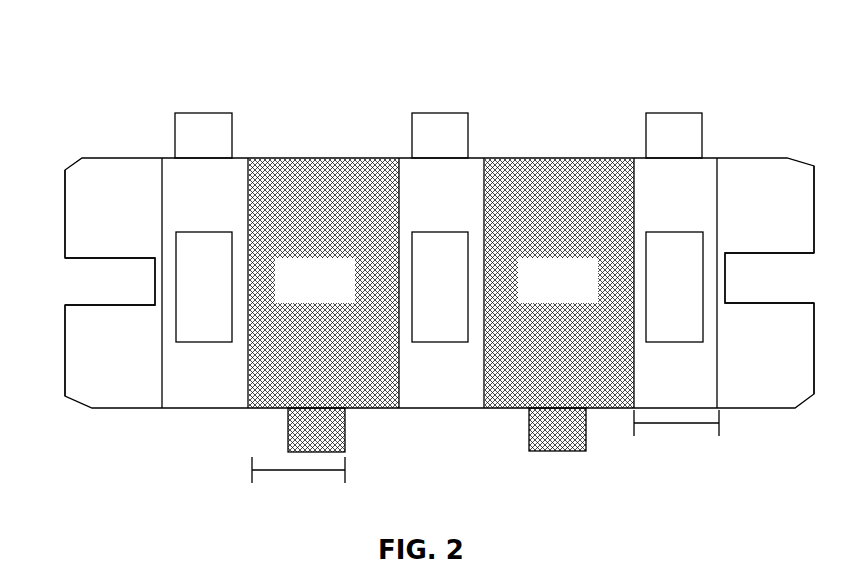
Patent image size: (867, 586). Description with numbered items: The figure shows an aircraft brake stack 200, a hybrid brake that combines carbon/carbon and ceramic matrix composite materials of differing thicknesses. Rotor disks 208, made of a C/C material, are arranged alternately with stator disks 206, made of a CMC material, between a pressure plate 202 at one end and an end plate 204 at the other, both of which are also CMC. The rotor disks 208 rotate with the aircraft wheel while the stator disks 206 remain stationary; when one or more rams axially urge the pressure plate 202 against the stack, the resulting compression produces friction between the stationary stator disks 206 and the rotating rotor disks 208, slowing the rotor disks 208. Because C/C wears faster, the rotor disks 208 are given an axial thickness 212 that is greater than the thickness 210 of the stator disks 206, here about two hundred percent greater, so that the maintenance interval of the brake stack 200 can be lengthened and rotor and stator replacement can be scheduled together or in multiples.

The aircraft brake stack 200 is at (112, 70).
The pressure plate 202 is at (74, 156).
The end plate 204 is at (805, 152).
The stator disks 206 is at (208, 105).
The rotor disks 208 is at (349, 437).
The thickness of stator disks 210 is at (696, 430).
The thickness of rotor disks 212 is at (289, 474).